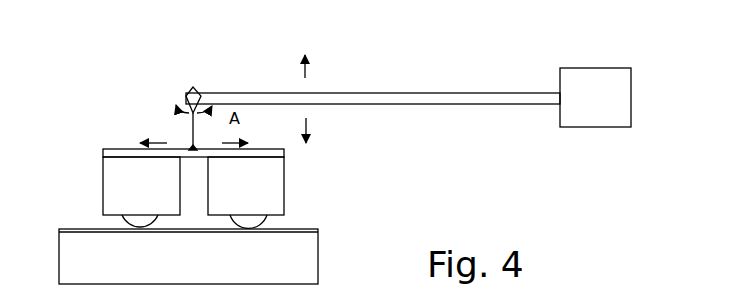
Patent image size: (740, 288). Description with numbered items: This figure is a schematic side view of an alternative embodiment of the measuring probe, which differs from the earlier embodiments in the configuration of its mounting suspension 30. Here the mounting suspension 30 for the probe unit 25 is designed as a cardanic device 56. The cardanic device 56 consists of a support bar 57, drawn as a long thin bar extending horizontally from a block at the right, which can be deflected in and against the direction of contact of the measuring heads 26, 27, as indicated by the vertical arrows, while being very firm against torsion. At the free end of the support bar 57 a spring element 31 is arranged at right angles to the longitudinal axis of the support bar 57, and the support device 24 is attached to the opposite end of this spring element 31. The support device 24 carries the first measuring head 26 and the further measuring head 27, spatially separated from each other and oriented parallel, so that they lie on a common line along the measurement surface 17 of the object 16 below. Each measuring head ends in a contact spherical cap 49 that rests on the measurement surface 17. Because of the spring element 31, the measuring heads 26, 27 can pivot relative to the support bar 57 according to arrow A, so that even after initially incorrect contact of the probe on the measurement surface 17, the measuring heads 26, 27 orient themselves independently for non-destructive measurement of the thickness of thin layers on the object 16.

The object 16 is at (303, 257).
The measurement surface 17 is at (303, 229).
The support device 24 is at (292, 99).
The probe unit 25 is at (400, 151).
The first measuring head 26 is at (113, 176).
The further measuring head 27 is at (273, 174).
The mounting suspension 30 is at (227, 70).
The spring element 31 is at (193, 125).
The contact spherical cap 49 is at (135, 222).
The cardanic device 56 is at (408, 72).
The support bar 57 is at (333, 90).